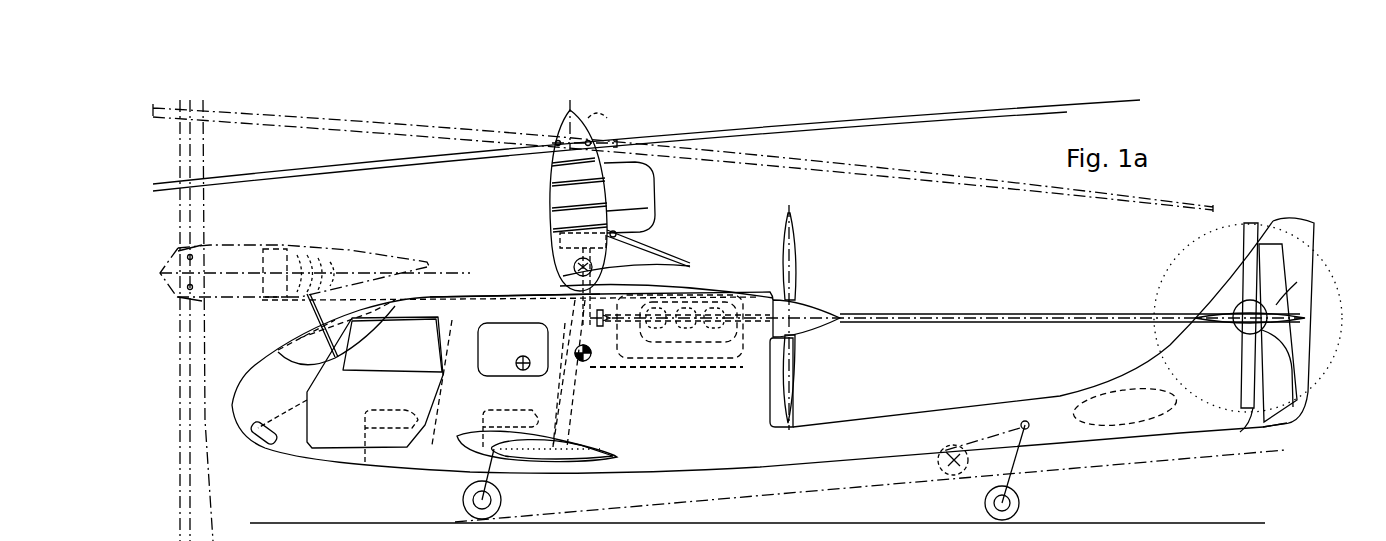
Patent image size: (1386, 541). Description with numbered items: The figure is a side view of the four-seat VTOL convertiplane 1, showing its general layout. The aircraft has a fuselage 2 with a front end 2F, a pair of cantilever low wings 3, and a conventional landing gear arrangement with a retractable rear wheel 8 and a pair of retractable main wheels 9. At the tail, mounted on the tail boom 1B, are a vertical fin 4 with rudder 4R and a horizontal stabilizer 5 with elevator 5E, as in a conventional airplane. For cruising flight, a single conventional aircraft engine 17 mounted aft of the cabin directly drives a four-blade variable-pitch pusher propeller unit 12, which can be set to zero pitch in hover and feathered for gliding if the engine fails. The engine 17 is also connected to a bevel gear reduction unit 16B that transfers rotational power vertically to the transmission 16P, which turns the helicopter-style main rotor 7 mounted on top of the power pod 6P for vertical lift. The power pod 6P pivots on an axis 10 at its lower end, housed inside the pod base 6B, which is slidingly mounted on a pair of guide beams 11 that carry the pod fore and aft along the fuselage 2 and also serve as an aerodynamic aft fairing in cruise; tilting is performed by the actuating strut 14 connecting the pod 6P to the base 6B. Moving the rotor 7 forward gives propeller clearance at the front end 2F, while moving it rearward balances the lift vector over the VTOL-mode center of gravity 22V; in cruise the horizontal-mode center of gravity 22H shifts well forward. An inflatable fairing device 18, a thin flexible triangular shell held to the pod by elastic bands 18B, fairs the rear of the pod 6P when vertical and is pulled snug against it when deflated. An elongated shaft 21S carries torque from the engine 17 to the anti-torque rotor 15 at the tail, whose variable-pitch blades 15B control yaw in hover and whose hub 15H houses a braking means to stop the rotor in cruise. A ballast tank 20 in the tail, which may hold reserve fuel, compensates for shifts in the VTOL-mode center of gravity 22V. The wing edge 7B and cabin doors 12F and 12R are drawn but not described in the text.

The convertiplane 1 is at (300, 484).
The tail boom 1B is at (900, 421).
The fuselage 2 is at (692, 472).
The fuselage front end 2F is at (265, 357).
The wings 3 is at (525, 461).
The vertical fin 4 is at (1217, 300).
The rudder 4R is at (1305, 237).
The horizontal stabilizer 5 is at (1226, 335).
The elevator 5E is at (1293, 282).
The power pod 6P is at (257, 238).
The pod base 6B is at (334, 242).
The main rotor 7 is at (542, 153).
The wing 7B is at (394, 163).
The rear wheel 8 is at (1030, 505).
The main wheels 9 is at (498, 500).
The axis 10 is at (692, 268).
The guide beams 11 is at (415, 290).
The pusher propeller unit 12 is at (797, 390).
The front door 12F is at (412, 410).
The rear door 12R is at (520, 385).
The actuating strut 14 is at (660, 246).
The anti-torque rotor 15 is at (1226, 285).
The tail rotor blades 15B is at (1250, 418).
The tail rotor hub 15H is at (1296, 438).
The transmission 16P is at (560, 238).
The bevel gear reduction unit 16B is at (576, 303).
The aircraft engine 17 is at (698, 365).
The inflatable fairing device 18 is at (645, 180).
The elastic bands 18B is at (648, 208).
The ballast tank 20 is at (1100, 398).
The elongated shaft 21S is at (935, 313).
The horizontal-mode center of gravity 22H is at (520, 357).
The VTOL-mode center of gravity 22V is at (590, 359).